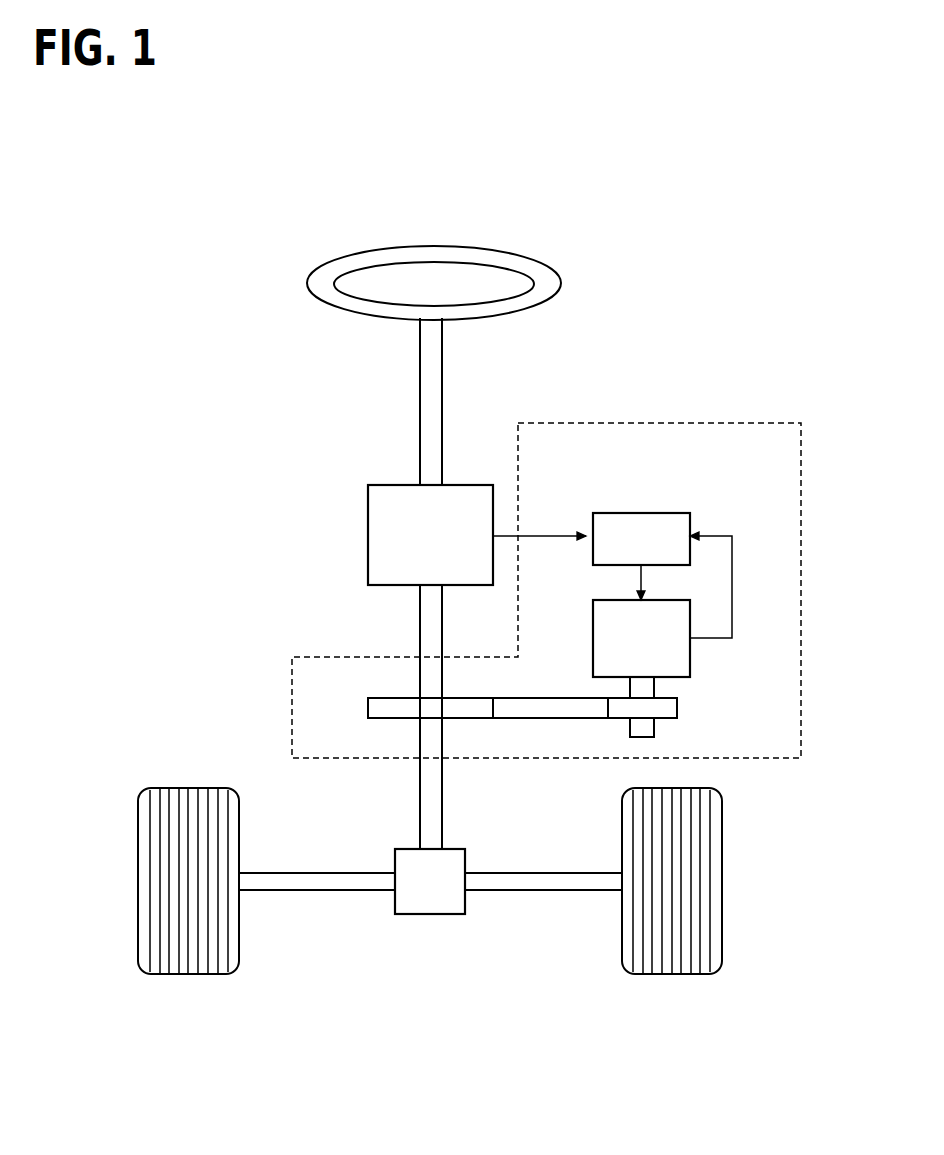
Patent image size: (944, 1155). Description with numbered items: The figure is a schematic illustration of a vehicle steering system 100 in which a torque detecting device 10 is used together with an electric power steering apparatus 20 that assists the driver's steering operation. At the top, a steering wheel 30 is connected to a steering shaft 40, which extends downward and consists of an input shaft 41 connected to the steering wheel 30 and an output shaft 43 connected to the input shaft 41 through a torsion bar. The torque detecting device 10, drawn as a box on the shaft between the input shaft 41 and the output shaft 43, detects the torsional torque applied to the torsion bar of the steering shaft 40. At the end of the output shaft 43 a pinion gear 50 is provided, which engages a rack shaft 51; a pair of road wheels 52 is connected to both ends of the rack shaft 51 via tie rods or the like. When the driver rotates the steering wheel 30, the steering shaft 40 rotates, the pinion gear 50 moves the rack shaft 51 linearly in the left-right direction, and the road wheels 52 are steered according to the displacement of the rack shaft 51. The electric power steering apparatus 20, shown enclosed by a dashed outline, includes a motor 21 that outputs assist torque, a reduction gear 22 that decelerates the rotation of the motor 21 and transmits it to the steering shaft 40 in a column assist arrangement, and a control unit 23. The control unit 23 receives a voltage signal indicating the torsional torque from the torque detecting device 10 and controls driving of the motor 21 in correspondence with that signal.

The steering system 100 is at (717, 337).
The torque detecting device 10 is at (368, 516).
The electric power steering apparatus 20 is at (803, 462).
The motor 21 is at (668, 599).
The reduction gear 22 is at (678, 706).
The control unit 23 is at (668, 514).
The steering wheel 30 is at (562, 283).
The steering shaft 40 is at (443, 363).
The input shaft 41 is at (423, 462).
The output shaft 43 is at (422, 624).
The pinion gear 50 is at (430, 914).
The rack shaft 51 is at (325, 890).
The road wheels 52 is at (138, 829).